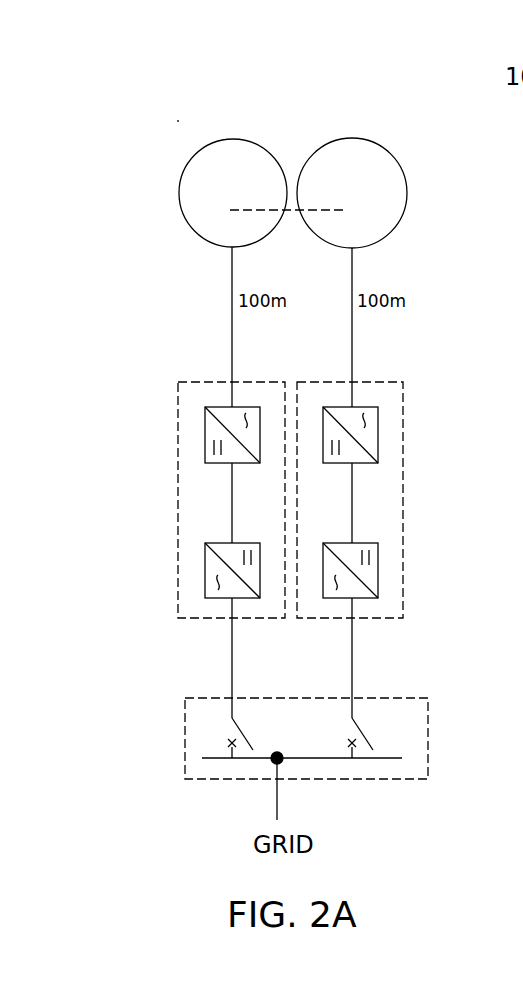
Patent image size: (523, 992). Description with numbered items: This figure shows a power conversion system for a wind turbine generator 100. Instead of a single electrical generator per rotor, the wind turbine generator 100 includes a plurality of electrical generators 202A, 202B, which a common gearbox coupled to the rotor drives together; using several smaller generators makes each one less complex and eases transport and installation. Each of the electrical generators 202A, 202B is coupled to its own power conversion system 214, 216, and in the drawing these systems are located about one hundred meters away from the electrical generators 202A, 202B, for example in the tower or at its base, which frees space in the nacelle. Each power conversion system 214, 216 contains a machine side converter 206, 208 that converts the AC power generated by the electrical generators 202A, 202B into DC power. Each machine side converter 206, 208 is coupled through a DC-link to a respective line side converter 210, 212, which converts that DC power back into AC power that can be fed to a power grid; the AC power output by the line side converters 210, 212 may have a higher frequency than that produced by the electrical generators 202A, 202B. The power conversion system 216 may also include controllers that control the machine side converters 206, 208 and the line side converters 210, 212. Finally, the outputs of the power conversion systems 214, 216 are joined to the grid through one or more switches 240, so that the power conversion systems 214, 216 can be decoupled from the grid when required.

The wind turbine generator 100 is at (178, 122).
The electrical generator 202A is at (238, 139).
The electrical generator 202B is at (383, 147).
The machine side converter 206 is at (205, 425).
The machine side converter 208 is at (378, 432).
The line side converter 210 is at (205, 560).
The line side converter 212 is at (378, 563).
The power conversion system 214 is at (253, 381).
The power conversion system 216 is at (382, 382).
The switch 240 is at (428, 730).